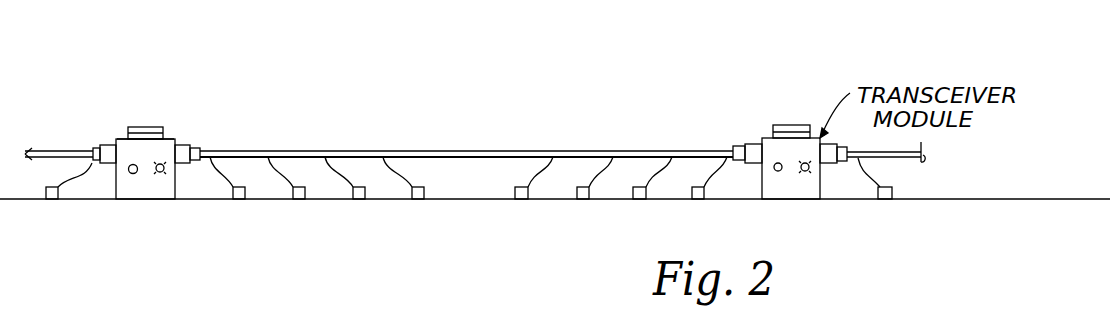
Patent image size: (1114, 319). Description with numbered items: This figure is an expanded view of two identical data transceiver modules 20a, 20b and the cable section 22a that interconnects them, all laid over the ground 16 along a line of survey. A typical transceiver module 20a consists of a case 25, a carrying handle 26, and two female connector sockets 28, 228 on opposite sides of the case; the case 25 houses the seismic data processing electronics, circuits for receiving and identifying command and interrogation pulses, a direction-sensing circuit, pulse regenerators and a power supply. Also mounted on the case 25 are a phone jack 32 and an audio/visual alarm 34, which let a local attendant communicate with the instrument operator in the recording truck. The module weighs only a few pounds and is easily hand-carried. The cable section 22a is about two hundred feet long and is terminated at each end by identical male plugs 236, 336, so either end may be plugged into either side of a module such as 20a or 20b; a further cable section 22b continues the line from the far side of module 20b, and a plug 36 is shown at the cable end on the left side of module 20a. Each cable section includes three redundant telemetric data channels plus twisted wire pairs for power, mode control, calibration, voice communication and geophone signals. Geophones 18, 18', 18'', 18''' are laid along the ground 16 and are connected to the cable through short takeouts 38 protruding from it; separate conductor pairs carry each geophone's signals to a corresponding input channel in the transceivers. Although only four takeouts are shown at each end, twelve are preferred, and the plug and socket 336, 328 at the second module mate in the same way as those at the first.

The ground 16 is at (1062, 198).
The geophone 18 is at (227, 219).
The geophone 18' is at (296, 219).
The geophone 18'' is at (362, 219).
The geophone 18''' is at (437, 219).
The data transceiver module 20a is at (173, 139).
The data transceiver module 20b is at (772, 145).
The cable section 22a is at (475, 151).
The cable section 22b is at (922, 163).
The case 25 is at (128, 147).
The carrying handle 26 is at (143, 127).
The female connector socket 28 is at (100, 146).
The phone jack 32 is at (133, 174).
The audio/visual alarm 34 is at (160, 173).
The cable end connector 36 is at (93, 148).
The takeout 38 is at (410, 151).
The female connector socket 228 is at (184, 145).
The male plug 236 is at (200, 150).
The cable connector 328 is at (755, 143).
The male plug 336 is at (737, 146).